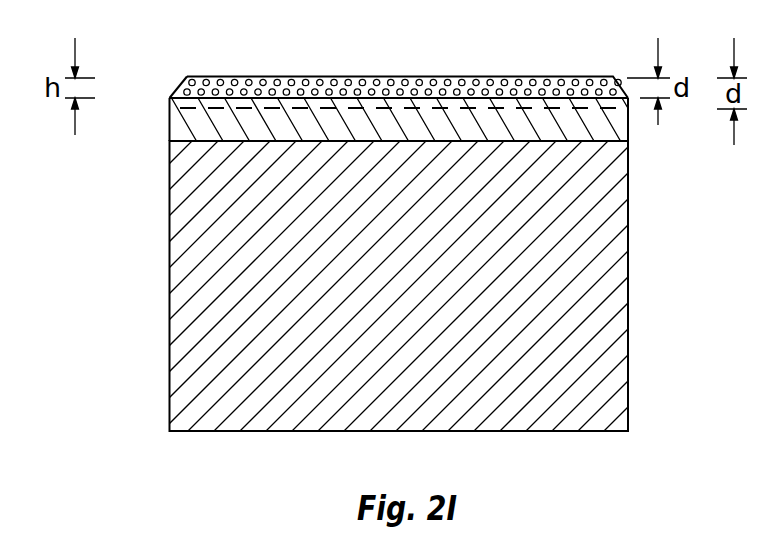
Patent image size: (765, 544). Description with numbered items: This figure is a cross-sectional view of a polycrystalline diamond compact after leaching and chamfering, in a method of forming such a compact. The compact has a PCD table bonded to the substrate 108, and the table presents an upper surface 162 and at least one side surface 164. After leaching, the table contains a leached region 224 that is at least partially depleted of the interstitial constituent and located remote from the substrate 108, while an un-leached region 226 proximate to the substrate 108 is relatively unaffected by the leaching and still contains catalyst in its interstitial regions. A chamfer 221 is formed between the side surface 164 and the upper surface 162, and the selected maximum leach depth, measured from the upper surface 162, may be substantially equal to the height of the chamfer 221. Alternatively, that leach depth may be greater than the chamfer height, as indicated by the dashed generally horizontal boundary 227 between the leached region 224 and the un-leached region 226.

The substrate 108 is at (582, 278).
The side surface 164 is at (170, 117).
The upper surface 162 is at (510, 76).
The leached region 224 is at (290, 85).
The chamfer 221 is at (177, 85).
The un-leached region 226 is at (613, 137).
The dashed generally horizontal boundary 227 is at (613, 100).